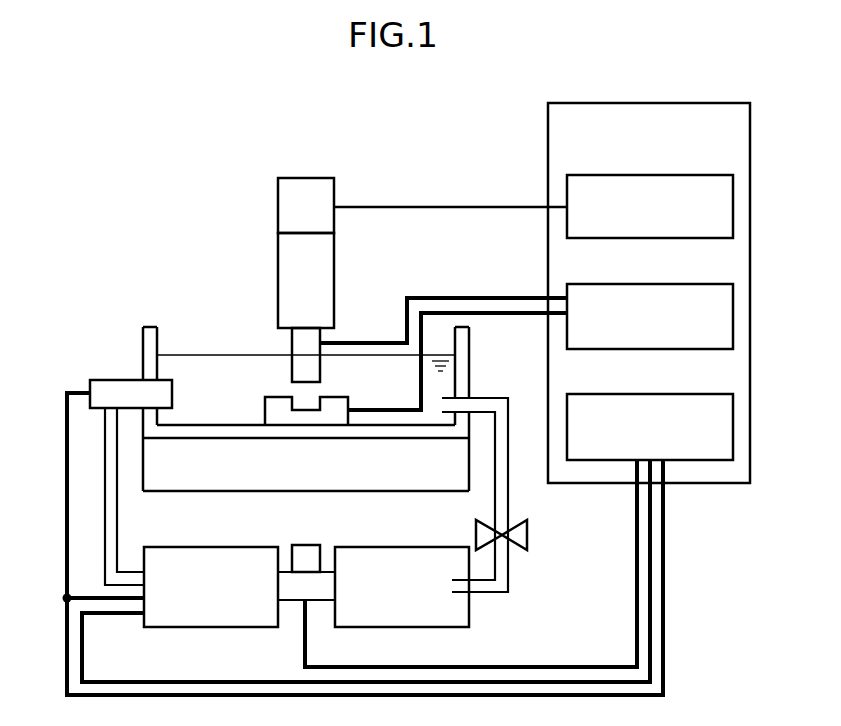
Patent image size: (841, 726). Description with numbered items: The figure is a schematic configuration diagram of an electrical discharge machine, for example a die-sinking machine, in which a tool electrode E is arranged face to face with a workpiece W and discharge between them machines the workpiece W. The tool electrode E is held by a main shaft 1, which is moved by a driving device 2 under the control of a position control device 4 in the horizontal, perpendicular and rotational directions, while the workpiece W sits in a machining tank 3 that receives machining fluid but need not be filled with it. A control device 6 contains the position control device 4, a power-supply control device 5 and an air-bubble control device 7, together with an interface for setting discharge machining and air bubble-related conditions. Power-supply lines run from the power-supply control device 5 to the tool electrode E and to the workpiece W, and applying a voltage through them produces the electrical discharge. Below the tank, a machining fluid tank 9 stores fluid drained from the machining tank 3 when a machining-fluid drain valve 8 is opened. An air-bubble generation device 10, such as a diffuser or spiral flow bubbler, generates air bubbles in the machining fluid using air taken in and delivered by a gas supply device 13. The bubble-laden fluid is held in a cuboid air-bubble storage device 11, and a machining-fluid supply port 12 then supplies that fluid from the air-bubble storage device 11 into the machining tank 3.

The main shaft 1 is at (326, 262).
The driving device 2 is at (305, 178).
The machining tank 3 is at (148, 330).
The position control device 4 is at (688, 175).
The power-supply control device 5 is at (688, 284).
The control device 6 is at (708, 103).
The air-bubble control device 7 is at (688, 394).
The machining-fluid drain valve 8 is at (527, 535).
The machining fluid tank 9 is at (403, 552).
The air-bubble generation device 10 is at (295, 604).
The air-bubble storage device 11 is at (209, 552).
The machining-fluid supply port 12 is at (105, 384).
The gas supply device 13 is at (308, 552).
The tool electrode E is at (297, 347).
The workpiece W is at (275, 403).